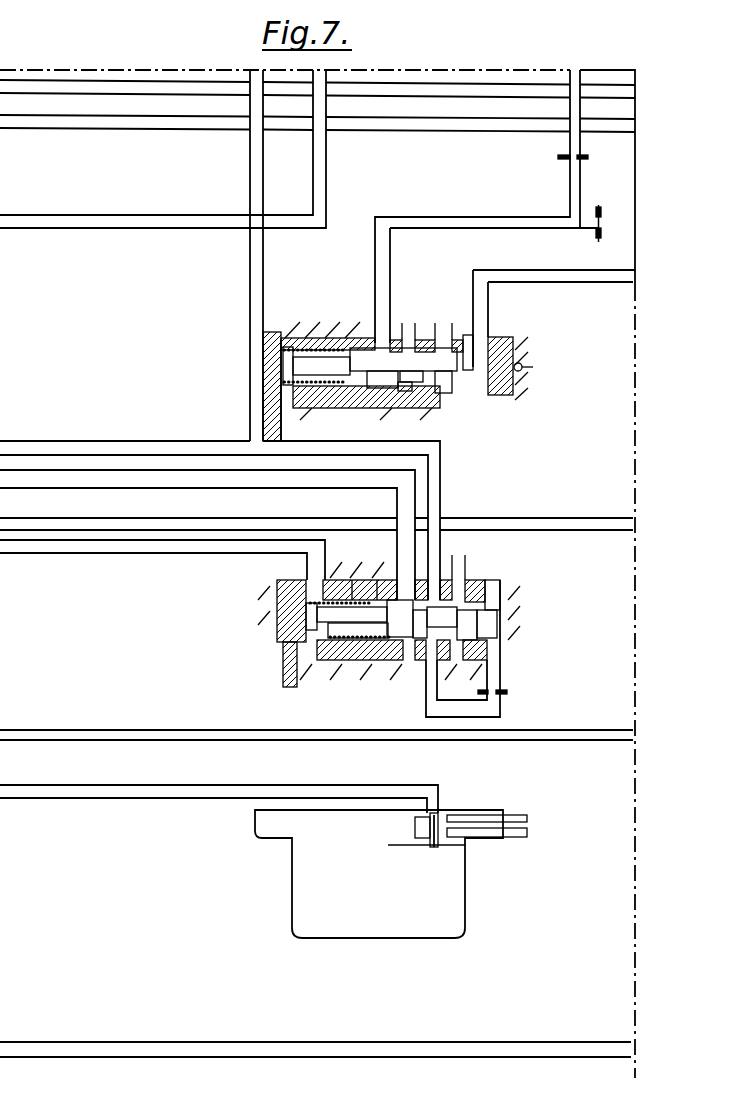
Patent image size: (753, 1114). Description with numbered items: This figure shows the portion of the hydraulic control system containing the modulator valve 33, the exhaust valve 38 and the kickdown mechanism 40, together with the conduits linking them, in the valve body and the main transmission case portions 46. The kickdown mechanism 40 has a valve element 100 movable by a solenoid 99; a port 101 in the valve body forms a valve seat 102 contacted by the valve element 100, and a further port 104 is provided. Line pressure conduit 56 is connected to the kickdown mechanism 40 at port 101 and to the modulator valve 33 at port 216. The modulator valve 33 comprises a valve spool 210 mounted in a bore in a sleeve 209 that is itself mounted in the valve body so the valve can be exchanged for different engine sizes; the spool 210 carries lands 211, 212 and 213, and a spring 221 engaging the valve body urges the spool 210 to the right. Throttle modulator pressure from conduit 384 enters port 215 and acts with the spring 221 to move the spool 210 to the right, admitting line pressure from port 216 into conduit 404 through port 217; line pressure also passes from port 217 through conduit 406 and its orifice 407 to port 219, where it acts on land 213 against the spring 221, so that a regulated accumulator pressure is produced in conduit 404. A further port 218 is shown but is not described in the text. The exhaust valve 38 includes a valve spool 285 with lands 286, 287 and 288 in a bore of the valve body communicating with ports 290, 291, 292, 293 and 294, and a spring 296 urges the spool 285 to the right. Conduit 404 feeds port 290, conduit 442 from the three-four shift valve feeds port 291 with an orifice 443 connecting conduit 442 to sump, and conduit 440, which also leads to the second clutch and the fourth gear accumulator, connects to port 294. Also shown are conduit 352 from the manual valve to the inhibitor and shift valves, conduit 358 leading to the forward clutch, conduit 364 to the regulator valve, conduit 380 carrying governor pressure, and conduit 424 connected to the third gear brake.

The modulator valve 33 is at (366, 630).
The exhaust valve 38 is at (404, 383).
The kickdown mechanism 40 is at (421, 852).
The main transmission case portions 46 is at (270, 630).
The line pressure conduit 56 is at (153, 475).
The solenoid 99 is at (293, 858).
The valve element 100 is at (431, 838).
The port 101 is at (437, 798).
The valve seat 102 is at (415, 826).
The port 104 is at (523, 822).
The sleeve 209 is at (312, 677).
The valve spool 210 is at (343, 577).
The land 211 is at (373, 580).
The land 212 is at (500, 628).
The land 213 is at (497, 606).
The port 215 is at (268, 598).
The port 216 is at (383, 680).
The port 217 is at (432, 670).
The exhaust port 218 is at (470, 577).
The port 219 is at (497, 590).
The spring 221 is at (275, 645).
The valve spool 285 is at (357, 347).
The land 286 is at (363, 337).
The land 287 is at (427, 328).
The land 288 is at (483, 337).
The port 290 is at (292, 330).
The port 291 is at (365, 401).
The port 292 is at (400, 393).
The port 293 is at (452, 395).
The port 294 is at (485, 398).
The spring 296 is at (285, 387).
The conduit 352 is at (82, 733).
The conduit 358 is at (198, 88).
The conduit 364 is at (173, 523).
The conduit 380 is at (108, 127).
The conduit 384 is at (88, 545).
The conduit 404 is at (250, 173).
The conduit 406 is at (500, 712).
The orifice 407 is at (508, 692).
The conduit 424 is at (110, 223).
The conduit 440 is at (560, 277).
The conduit 442 is at (487, 220).
The orifice 443 is at (603, 222).